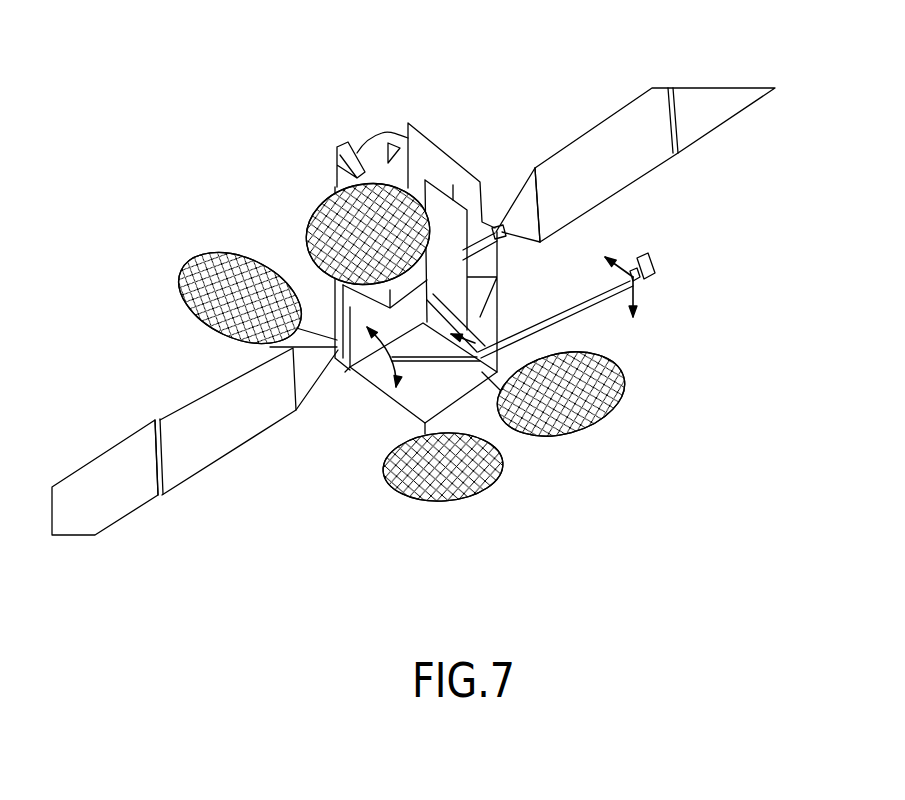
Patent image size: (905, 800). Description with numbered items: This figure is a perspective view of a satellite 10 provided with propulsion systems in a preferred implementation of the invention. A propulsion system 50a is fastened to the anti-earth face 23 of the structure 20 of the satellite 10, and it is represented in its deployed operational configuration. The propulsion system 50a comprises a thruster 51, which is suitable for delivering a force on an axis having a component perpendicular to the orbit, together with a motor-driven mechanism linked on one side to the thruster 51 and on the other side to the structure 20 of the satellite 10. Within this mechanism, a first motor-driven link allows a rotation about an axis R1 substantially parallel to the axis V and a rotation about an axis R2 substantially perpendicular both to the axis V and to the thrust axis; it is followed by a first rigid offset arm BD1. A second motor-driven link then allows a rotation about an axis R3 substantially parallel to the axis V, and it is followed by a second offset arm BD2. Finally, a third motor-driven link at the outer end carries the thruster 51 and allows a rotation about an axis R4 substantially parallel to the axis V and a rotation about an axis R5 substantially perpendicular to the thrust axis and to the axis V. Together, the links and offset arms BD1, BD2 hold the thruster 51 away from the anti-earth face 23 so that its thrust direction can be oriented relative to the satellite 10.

The satellite 10 is at (430, 115).
The structure 20 is at (443, 155).
The anti-earth face 23 is at (378, 385).
The thruster 51 is at (652, 260).
The propulsion system 50a is at (618, 476).
The axis R1 is at (350, 367).
The axis R2 is at (396, 388).
The axis R3 is at (480, 345).
The axis R4 is at (608, 259).
The axis R5 is at (643, 302).
The first rigid offset arm BD1 is at (453, 366).
The second offset arm BD2 is at (600, 300).